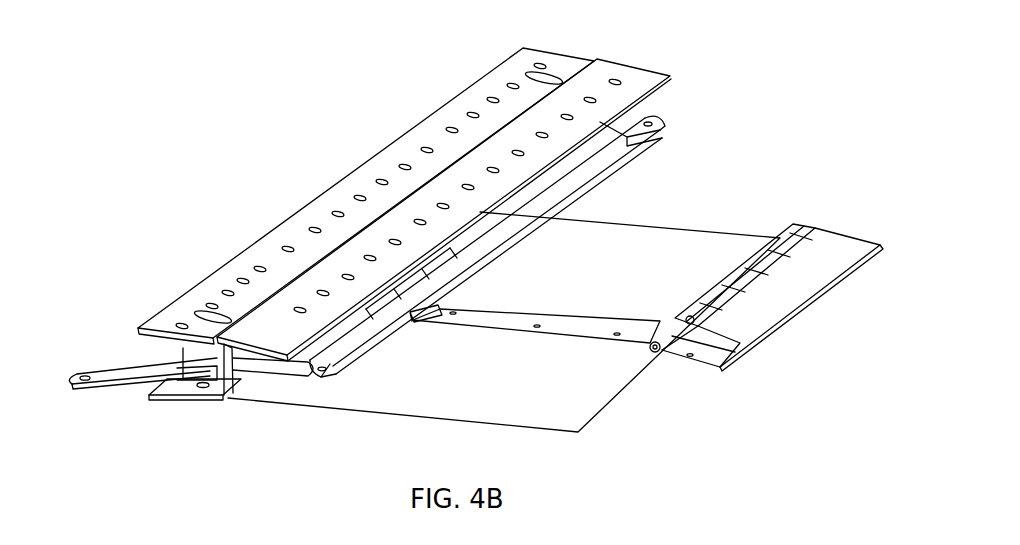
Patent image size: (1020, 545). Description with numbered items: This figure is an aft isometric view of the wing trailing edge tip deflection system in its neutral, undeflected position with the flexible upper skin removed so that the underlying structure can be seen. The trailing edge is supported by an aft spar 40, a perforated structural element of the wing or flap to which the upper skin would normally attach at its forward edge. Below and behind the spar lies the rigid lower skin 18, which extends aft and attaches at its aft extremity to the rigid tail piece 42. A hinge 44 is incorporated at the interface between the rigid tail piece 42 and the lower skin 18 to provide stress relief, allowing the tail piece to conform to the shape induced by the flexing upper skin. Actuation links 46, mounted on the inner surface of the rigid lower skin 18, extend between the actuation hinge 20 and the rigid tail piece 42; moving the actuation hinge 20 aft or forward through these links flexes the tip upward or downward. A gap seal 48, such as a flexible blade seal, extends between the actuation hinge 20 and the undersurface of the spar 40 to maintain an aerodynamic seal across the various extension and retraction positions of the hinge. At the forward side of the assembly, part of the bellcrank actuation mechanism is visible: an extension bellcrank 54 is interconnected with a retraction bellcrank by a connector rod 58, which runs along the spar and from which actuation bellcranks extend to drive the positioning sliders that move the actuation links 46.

The lower skin 18 is at (570, 270).
The actuation hinge 20 is at (408, 323).
The aft spar 40 is at (415, 168).
The rigid tail piece 42 is at (685, 362).
The hinge 44 is at (763, 257).
The actuation links 46 is at (550, 325).
The gap seal 48 is at (277, 392).
The extension bellcrank 54 is at (113, 375).
The connector rod 58 is at (613, 147).